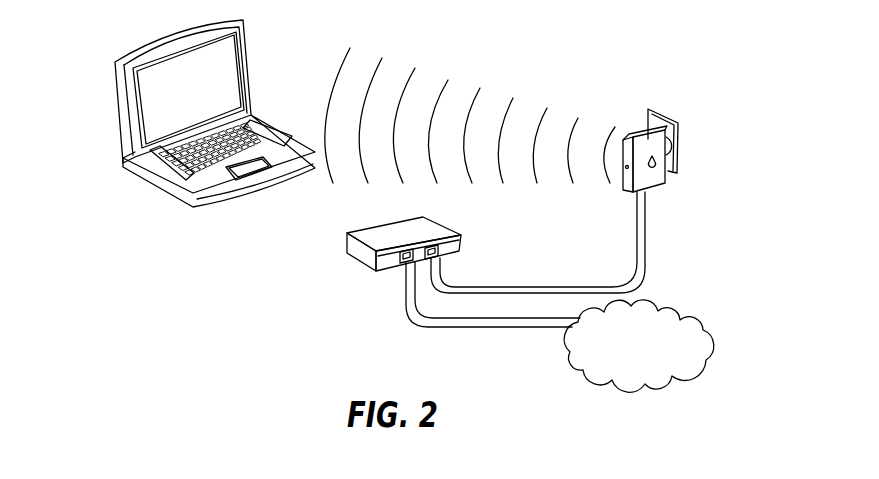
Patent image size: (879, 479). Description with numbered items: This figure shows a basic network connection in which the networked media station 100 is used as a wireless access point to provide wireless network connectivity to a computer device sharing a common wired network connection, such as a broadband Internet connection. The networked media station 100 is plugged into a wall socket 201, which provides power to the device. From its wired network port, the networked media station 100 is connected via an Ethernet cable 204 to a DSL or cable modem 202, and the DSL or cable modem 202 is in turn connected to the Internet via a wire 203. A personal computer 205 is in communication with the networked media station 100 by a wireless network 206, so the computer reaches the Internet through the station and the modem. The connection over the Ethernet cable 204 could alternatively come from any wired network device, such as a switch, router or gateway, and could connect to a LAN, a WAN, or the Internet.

The networked media station 100 is at (643, 133).
The wall socket 201 is at (680, 147).
The DSL or cable modem 202 is at (347, 238).
The wire 203 is at (410, 285).
The Ethernet cable 204 is at (582, 287).
The personal computer 205 is at (117, 93).
The wireless network 206 is at (448, 80).